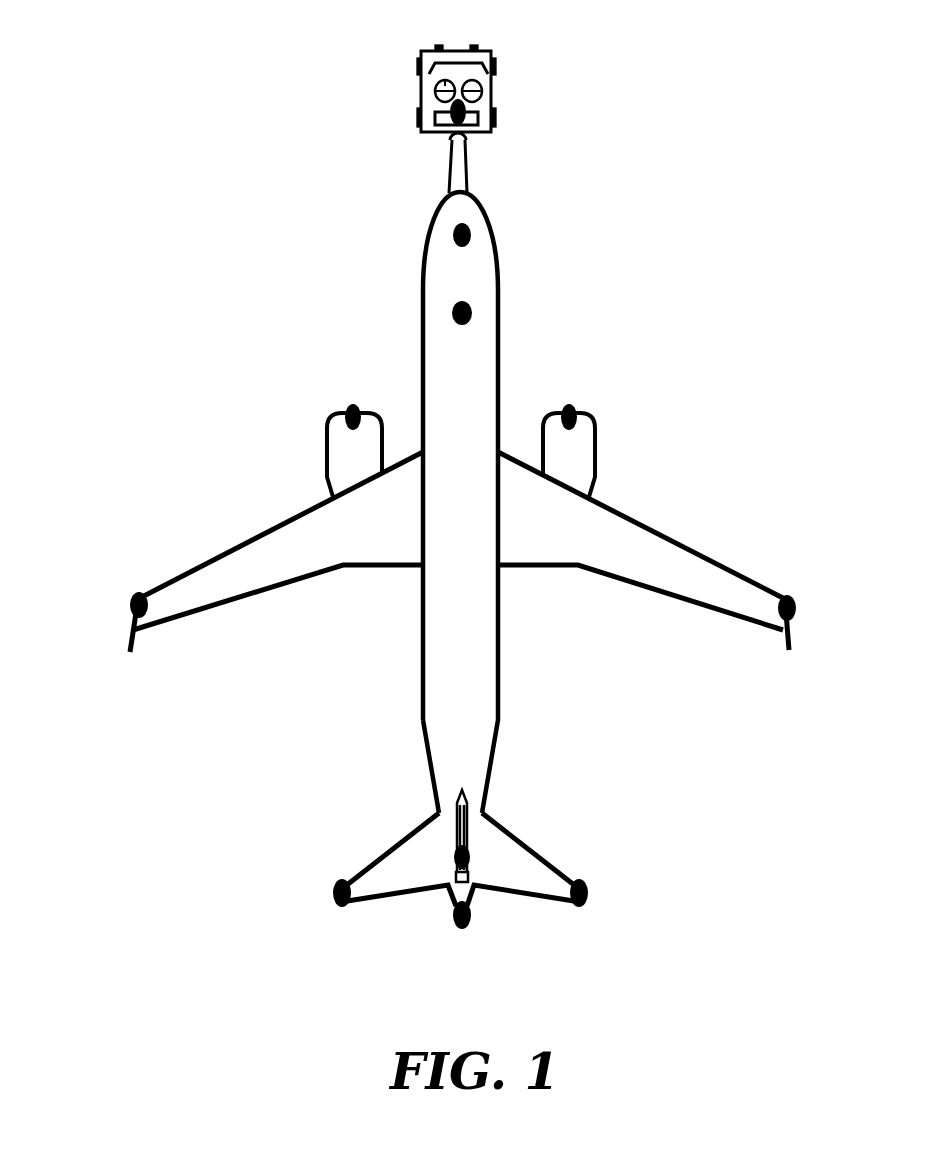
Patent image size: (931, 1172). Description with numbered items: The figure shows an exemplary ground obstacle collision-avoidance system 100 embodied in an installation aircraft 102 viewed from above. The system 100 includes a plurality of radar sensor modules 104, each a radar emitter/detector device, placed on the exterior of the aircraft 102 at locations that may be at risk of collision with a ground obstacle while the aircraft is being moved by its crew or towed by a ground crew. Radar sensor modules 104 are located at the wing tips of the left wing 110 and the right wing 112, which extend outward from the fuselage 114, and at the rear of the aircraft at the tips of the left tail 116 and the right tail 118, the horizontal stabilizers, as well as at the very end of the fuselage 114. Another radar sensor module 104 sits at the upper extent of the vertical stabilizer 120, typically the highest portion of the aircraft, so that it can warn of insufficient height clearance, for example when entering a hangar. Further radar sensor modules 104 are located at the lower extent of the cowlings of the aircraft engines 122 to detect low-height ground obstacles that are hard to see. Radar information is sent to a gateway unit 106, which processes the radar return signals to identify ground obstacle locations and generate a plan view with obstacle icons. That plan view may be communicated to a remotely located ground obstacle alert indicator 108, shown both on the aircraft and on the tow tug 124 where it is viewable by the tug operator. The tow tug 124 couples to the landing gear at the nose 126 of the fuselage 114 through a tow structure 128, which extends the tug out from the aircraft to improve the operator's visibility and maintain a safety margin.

The ground obstacle collision-avoidance system 100 is at (228, 136).
The installation aircraft 102 is at (212, 348).
The radar sensor module 104 is at (356, 404).
The gateway unit 106 is at (452, 315).
The ground obstacle alert indicator 108 is at (453, 232).
The left wing 110 is at (217, 607).
The right wing 112 is at (667, 595).
The fuselage 114 is at (498, 723).
The left tail 116 is at (355, 873).
The right tail 118 is at (533, 845).
The vertical stabilizer 120 is at (468, 802).
The aircraft engine 122 is at (326, 458).
The tow tug 124 is at (392, 72).
The nose 126 is at (482, 208).
The tow structure 128 is at (450, 168).